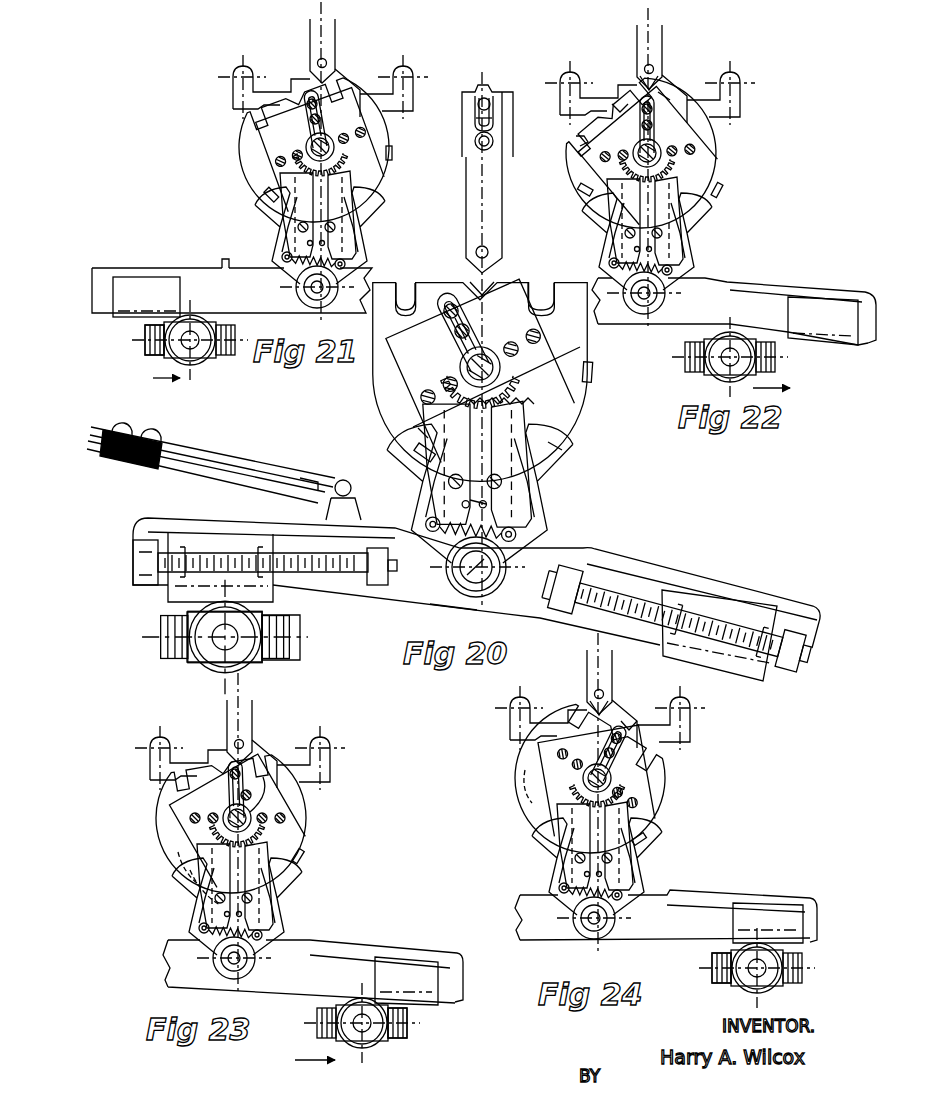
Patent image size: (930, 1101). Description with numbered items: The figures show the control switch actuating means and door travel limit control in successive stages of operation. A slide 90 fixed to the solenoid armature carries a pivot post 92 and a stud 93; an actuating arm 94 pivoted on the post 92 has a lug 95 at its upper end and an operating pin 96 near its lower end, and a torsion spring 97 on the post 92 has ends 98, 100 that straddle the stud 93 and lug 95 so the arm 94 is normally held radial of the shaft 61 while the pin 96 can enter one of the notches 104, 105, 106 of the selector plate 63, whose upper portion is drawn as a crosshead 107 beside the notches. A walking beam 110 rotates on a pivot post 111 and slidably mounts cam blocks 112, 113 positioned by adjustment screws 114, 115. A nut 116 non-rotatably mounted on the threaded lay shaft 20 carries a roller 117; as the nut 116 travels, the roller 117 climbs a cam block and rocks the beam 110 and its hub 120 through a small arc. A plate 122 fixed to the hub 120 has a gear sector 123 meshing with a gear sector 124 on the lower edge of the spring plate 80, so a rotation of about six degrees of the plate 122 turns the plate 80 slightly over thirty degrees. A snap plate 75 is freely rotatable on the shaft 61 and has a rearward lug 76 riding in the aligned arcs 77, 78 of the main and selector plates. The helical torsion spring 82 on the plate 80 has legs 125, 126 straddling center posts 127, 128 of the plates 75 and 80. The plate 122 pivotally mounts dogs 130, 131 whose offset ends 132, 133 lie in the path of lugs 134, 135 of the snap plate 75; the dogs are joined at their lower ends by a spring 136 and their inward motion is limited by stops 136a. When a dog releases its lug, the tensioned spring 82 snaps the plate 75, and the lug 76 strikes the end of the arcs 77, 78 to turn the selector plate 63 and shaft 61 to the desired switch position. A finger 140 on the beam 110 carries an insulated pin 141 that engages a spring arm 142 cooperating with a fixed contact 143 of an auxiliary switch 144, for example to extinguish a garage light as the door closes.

In FIG. 21, the lay shaft 20 is at (160, 355).
In FIG. 20, the lay shaft 20 is at (288, 661).
In FIG. 23, the lay shaft 20 is at (408, 1028).
In FIG. 24, the lay shaft 20 is at (711, 967).
In FIG. 20, the shaft 61 is at (500, 358).
In FIG. 21, the selector plate 63 is at (355, 73).
In FIG. 22, the selector plate 63 is at (686, 80).
In FIG. 20, the selector plate 63 is at (372, 372).
In FIG. 23, the selector plate 63 is at (158, 829).
In FIG. 21, the snap plate 75 is at (278, 160).
In FIG. 20, the snap plate 75 is at (432, 382).
In FIG. 23, the snap plate 75 is at (305, 826).
In FIG. 23, the lug 76 is at (188, 871).
In FIG. 24, the lug 76 is at (526, 794).
In FIG. 23, the arc 77 is at (198, 882).
In FIG. 20, the arc 78 is at (447, 380).
In FIG. 21, the spring plate 80 is at (290, 131).
In FIG. 20, the spring plate 80 is at (426, 388).
In FIG. 23, the spring plate 80 is at (268, 813).
In FIG. 21, the helical torsion spring 82 is at (308, 156).
In FIG. 20, the helical torsion spring 82 is at (466, 362).
In FIG. 23, the helical torsion spring 82 is at (212, 829).
In FIG. 20, the slide 90 is at (514, 126).
In FIG. 20, the pivot post 92 is at (477, 147).
In FIG. 20, the stud 93 is at (490, 98).
In FIG. 21, the actuating arm 94 is at (332, 42).
In FIG. 22, the actuating arm 94 is at (664, 41).
In FIG. 20, the actuating arm 94 is at (503, 219).
In FIG. 20, the lug 95 is at (477, 121).
In FIG. 22, the operating pin 96 is at (646, 88).
In FIG. 24, the operating pin 96 is at (594, 712).
In FIG. 20, the torsion spring 97 is at (477, 138).
In FIG. 20, the spring end 98 is at (496, 100).
In FIG. 20, the spring end 100 is at (478, 93).
In FIG. 22, the notch 104 is at (616, 108).
In FIG. 20, the notch 104 is at (470, 264).
In FIG. 24, the notch 104 is at (629, 726).
In FIG. 22, the notch 105 is at (583, 140).
In FIG. 20, the notch 105 is at (404, 298).
In FIG. 22, the notch 106 is at (660, 92).
In FIG. 20, the notch 106 is at (541, 296).
In FIG. 22, the crosshead 107 is at (741, 104).
In FIG. 24, the crosshead 107 is at (692, 733).
In FIG. 20, the walking beam 110 is at (522, 616).
In FIG. 23, the walking beam 110 is at (326, 942).
In FIG. 20, the pivot post 111 is at (460, 586).
In FIG. 20, the cam block 112 is at (727, 681).
In FIG. 23, the cam block 112 is at (406, 981).
In FIG. 24, the cam block 112 is at (768, 923).
In FIG. 21, the cam block 113 is at (142, 312).
In FIG. 20, the cam block 113 is at (168, 601).
In FIG. 20, the adjustment screw 114 is at (612, 595).
In FIG. 20, the adjustment screw 115 is at (140, 546).
In FIG. 20, the nut 116 is at (190, 661).
In FIG. 21, the roller 117 is at (206, 362).
In FIG. 20, the roller 117 is at (236, 672).
In FIG. 23, the roller 117 is at (380, 1046).
In FIG. 24, the roller 117 is at (750, 1000).
In FIG. 20, the hub 120 is at (496, 590).
In FIG. 22, the plate 122 is at (693, 242).
In FIG. 20, the plate 122 is at (555, 527).
In FIG. 23, the plate 122 is at (274, 916).
In FIG. 20, the gear sector 123 is at (506, 404).
In FIG. 20, the gear sector 124 is at (509, 381).
In FIG. 20, the spring leg 125 is at (466, 318).
In FIG. 21, the spring leg 126 is at (302, 110).
In FIG. 20, the spring leg 126 is at (452, 323).
In FIG. 23, the spring leg 126 is at (222, 798).
In FIG. 21, the center post 127 is at (312, 99).
In FIG. 20, the center post 127 is at (452, 306).
In FIG. 23, the center post 127 is at (242, 772).
In FIG. 20, the center post 128 is at (470, 333).
In FIG. 23, the center post 128 is at (264, 800).
In FIG. 21, the dog 130 is at (362, 197).
In FIG. 22, the dog 130 is at (666, 221).
In FIG. 20, the dog 130 is at (505, 464).
In FIG. 23, the dog 130 is at (255, 886).
In FIG. 21, the dog 131 is at (296, 215).
In FIG. 22, the dog 131 is at (626, 221).
In FIG. 20, the dog 131 is at (453, 464).
In FIG. 20, the offset end 132 is at (562, 449).
In FIG. 20, the offset end 133 is at (420, 431).
In FIG. 22, the lug 134 is at (719, 191).
In FIG. 20, the lug 134 is at (592, 376).
In FIG. 23, the lug 134 is at (302, 858).
In FIG. 24, the lug 134 is at (643, 842).
In FIG. 21, the lug 135 is at (268, 197).
In FIG. 22, the lug 135 is at (582, 190).
In FIG. 20, the lug 135 is at (424, 453).
In FIG. 21, the spring 136 is at (322, 254).
In FIG. 20, the spring 136 is at (506, 520).
In FIG. 20, the stop 136a is at (482, 504).
In FIG. 21, the finger 140 is at (224, 258).
In FIG. 20, the finger 140 is at (328, 510).
In FIG. 20, the insulated pin 141 is at (352, 490).
In FIG. 20, the spring arm 142 is at (266, 472).
In FIG. 20, the fixed contact 143 is at (240, 485).
In FIG. 20, the switch 144 is at (222, 455).